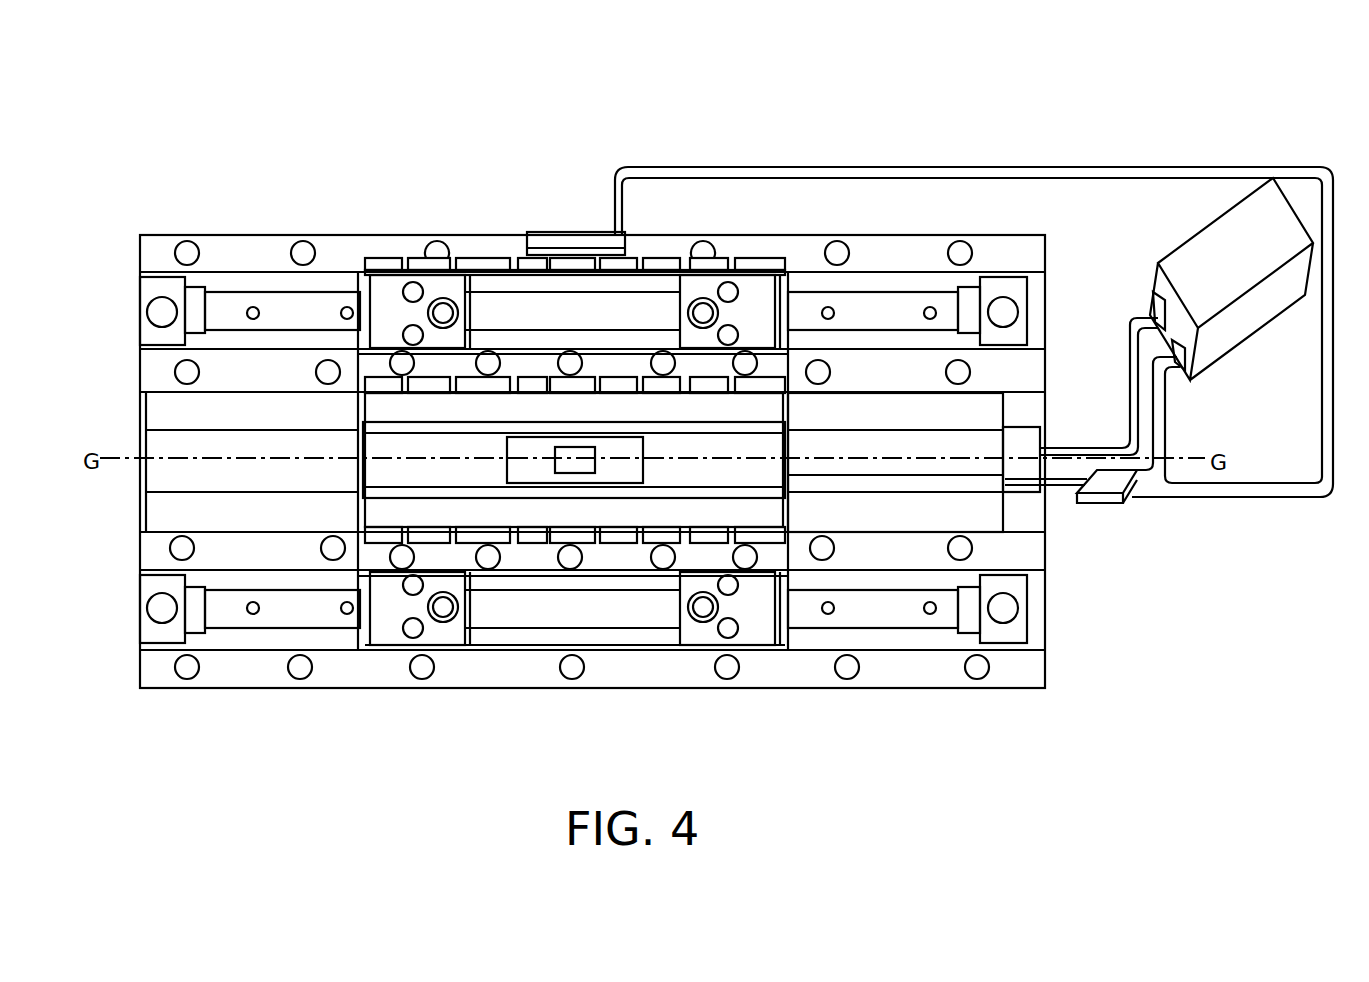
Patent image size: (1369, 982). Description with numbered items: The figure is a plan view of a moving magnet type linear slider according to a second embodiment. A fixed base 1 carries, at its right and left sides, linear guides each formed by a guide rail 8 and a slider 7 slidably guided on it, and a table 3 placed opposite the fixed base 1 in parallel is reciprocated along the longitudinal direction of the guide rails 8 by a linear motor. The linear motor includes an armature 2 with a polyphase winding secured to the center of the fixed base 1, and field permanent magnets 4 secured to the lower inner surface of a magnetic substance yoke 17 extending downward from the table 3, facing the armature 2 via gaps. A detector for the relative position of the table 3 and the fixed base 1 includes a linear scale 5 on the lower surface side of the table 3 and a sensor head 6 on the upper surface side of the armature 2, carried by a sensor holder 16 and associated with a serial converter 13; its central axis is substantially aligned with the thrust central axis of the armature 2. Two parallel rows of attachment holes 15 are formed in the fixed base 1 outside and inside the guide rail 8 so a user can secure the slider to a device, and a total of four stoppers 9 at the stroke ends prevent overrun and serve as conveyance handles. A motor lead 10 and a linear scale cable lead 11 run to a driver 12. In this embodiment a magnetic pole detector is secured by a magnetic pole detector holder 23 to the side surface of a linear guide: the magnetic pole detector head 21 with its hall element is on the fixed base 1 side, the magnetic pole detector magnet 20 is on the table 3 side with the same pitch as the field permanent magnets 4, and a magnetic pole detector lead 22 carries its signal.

The fixed base 1 is at (227, 250).
The armature 2 is at (243, 393).
The table 3 is at (660, 287).
The field permanent magnet 4 is at (638, 543).
The linear scale 5 is at (465, 493).
The sensor head 6 is at (528, 480).
The slider 7 is at (456, 290).
The guide rail 8 is at (813, 302).
The stopper 9 is at (1005, 297).
The motor lead 10 is at (1087, 449).
The linear scale cable lead 11 is at (1053, 487).
The driver 12 is at (1223, 217).
The serial converter 13 is at (1090, 505).
The attachment hole 15 is at (185, 257).
The sensor holder 16 is at (387, 503).
The magnetic substance yoke 17 is at (615, 365).
The magnetic pole detector magnet 20 is at (448, 258).
The magnetic pole detector head 21 is at (580, 263).
The magnetic pole detector lead 22 is at (948, 167).
The magnetic pole detector holder 23 is at (537, 232).